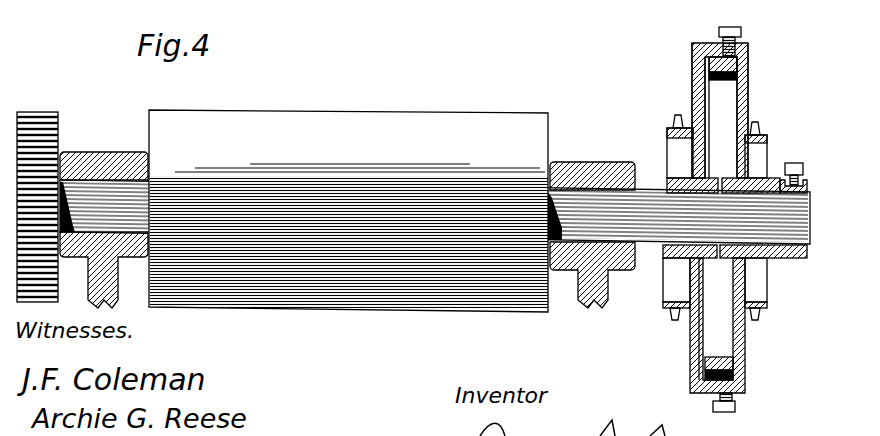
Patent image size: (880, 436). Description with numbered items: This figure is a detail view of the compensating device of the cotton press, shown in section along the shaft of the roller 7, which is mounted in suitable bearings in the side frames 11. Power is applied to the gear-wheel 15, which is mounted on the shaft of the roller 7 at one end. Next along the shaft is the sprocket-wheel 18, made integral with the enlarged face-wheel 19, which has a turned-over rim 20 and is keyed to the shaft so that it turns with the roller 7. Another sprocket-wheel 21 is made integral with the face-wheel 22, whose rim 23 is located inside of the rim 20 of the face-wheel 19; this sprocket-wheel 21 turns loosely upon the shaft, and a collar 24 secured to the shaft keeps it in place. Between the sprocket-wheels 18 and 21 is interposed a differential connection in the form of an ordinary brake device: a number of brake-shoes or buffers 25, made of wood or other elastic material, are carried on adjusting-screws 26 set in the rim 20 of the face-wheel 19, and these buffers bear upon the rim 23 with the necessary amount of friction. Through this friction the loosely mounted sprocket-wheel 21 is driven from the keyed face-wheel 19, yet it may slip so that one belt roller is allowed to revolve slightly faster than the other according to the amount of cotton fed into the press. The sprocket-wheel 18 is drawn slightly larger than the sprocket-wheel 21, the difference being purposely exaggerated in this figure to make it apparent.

The roller 7 is at (348, 211).
The side frame 11 is at (104, 230).
The gear-wheel 15 is at (37, 198).
The sprocket-wheel 18 is at (675, 147).
The face-wheel 19 is at (700, 72).
The rim 20 is at (705, 43).
The sprocket-wheel 21 is at (760, 132).
The face-wheel 22 is at (750, 92).
The rim 23 is at (718, 82).
The collar 24 is at (778, 258).
The brake-shoes or buffers 25 is at (748, 58).
The adjusting-screws 26 is at (737, 27).